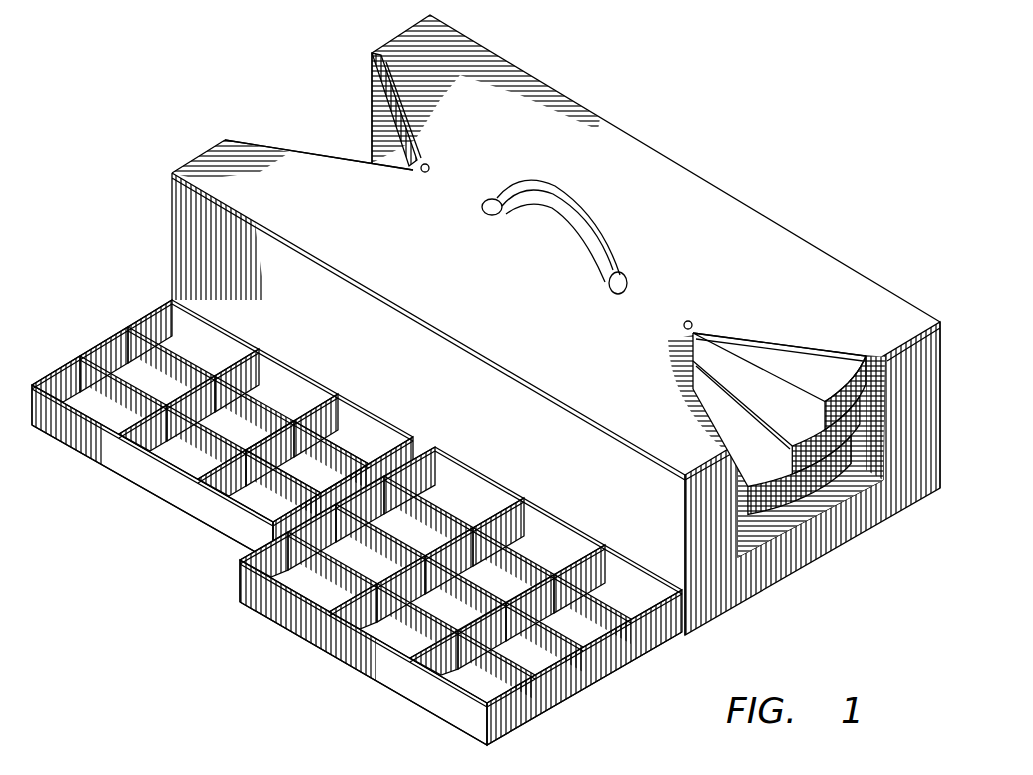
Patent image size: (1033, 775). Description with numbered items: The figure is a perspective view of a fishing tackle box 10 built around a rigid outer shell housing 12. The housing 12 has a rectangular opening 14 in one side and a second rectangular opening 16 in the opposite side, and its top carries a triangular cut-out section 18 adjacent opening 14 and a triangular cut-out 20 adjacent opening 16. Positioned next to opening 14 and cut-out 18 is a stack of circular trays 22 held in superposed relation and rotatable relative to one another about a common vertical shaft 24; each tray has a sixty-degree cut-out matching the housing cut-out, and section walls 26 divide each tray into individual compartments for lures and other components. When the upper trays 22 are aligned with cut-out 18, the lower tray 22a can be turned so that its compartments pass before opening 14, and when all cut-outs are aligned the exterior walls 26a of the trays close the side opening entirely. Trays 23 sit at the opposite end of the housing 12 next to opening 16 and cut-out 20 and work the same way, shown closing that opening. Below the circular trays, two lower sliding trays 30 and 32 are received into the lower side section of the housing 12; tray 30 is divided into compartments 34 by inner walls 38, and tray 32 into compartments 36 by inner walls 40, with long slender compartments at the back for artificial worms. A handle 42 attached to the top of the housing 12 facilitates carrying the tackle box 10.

The tackle box 10 is at (568, 78).
The outer shell housing 12 is at (678, 255).
The rectangular opening 14 is at (870, 475).
The rectangular opening 16 is at (328, 131).
The triangular cut-out section 18 is at (757, 340).
The triangular cut-out 20 is at (428, 162).
The circular trays 22 is at (790, 446).
The lower tray 22a is at (775, 505).
The trays 23 is at (387, 145).
The vertical shaft 24 is at (690, 320).
The section walls 26 is at (785, 352).
The exterior walls 26a is at (745, 372).
The lower sliding tray 30 is at (357, 525).
The lower sliding tray 32 is at (222, 431).
The compartments 34 is at (461, 598).
The compartments 36 is at (188, 462).
The inner walls 38 is at (393, 618).
The inner walls 40 is at (277, 493).
The handle 42 is at (595, 222).